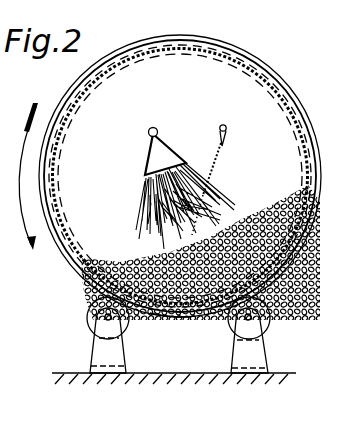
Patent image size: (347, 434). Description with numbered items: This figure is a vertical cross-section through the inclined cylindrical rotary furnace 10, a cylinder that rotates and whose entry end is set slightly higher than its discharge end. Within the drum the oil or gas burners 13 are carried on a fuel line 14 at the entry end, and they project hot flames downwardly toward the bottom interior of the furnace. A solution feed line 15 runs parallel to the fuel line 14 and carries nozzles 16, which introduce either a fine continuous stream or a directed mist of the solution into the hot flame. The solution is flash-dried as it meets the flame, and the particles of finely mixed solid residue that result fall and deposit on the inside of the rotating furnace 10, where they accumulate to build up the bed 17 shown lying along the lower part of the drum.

The inclined cylindrical rotary furnace 10 is at (281, 93).
The oil or gas burners 13 is at (151, 153).
The fuel line 14 is at (155, 127).
The solution feed line 15 is at (223, 124).
The nozzles 16 is at (228, 135).
The bed 17 is at (168, 305).